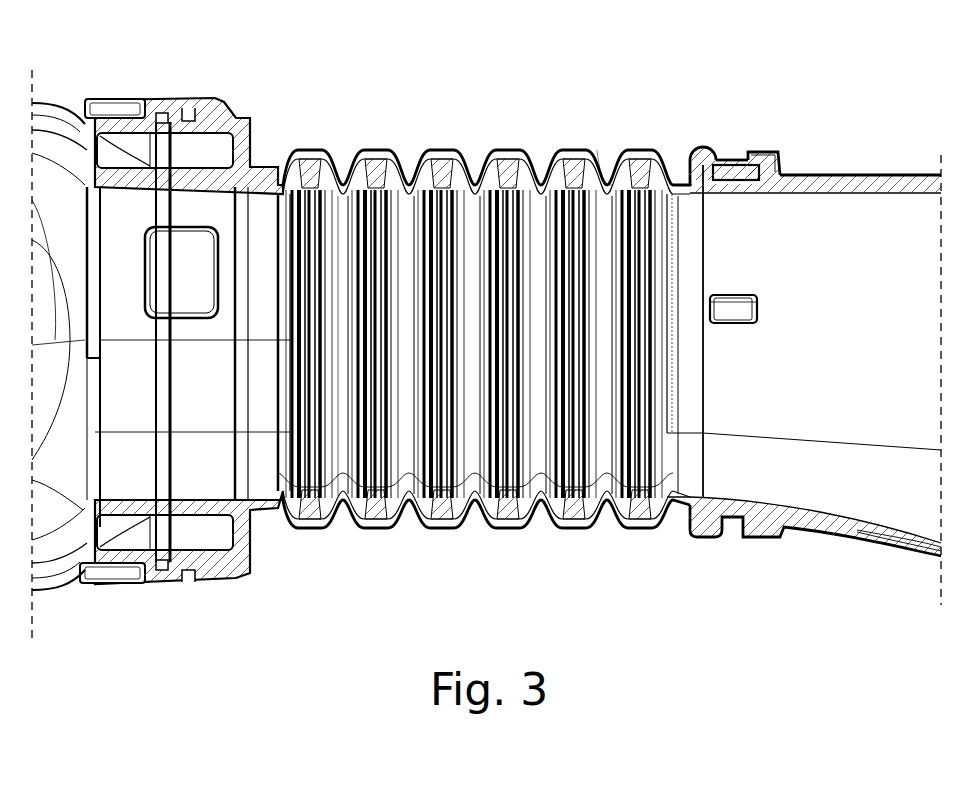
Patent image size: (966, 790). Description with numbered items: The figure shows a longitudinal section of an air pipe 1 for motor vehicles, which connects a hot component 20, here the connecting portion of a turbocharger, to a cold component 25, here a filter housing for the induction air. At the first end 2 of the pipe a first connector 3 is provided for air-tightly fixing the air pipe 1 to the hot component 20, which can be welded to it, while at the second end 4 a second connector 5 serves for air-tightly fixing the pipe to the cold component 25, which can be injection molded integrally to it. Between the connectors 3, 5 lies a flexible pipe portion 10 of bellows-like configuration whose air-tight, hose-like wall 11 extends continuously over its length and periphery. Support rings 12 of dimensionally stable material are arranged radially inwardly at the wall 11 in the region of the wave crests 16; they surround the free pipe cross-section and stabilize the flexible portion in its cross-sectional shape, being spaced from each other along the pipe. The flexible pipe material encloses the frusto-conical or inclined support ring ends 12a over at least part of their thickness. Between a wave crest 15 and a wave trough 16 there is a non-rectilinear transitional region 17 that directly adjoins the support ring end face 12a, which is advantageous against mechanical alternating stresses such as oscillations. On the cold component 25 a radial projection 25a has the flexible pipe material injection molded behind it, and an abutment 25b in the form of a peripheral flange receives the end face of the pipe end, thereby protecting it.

The air pipe 1 is at (481, 120).
The first end 2 is at (642, 535).
The first connector 3 is at (278, 543).
The second end 4 is at (738, 167).
The second connector 5 is at (205, 110).
The flexible pipe portion 10 is at (440, 148).
The wall 11 is at (340, 210).
The support ring 12 is at (572, 172).
The support ring end 12a is at (437, 524).
The wave crest 15 is at (638, 162).
The wave crest 16 is at (605, 177).
The wave trough / transitional region 17 is at (418, 168).
The hot component 20 is at (50, 112).
The cold component 25 is at (880, 208).
The radial projection 25a is at (705, 165).
The abutment 25b is at (763, 162).